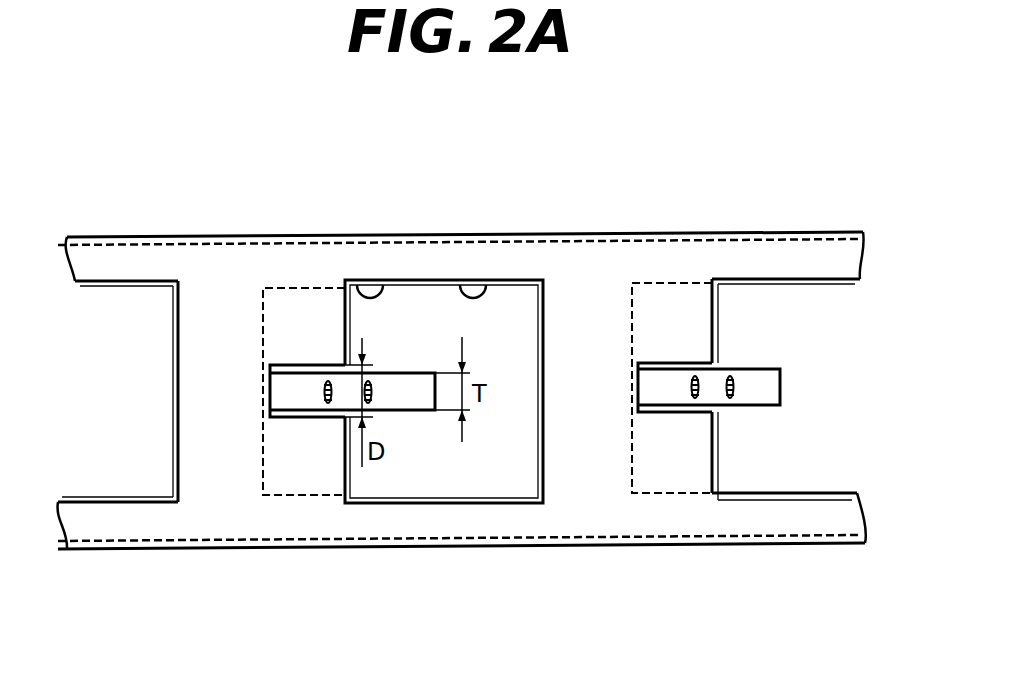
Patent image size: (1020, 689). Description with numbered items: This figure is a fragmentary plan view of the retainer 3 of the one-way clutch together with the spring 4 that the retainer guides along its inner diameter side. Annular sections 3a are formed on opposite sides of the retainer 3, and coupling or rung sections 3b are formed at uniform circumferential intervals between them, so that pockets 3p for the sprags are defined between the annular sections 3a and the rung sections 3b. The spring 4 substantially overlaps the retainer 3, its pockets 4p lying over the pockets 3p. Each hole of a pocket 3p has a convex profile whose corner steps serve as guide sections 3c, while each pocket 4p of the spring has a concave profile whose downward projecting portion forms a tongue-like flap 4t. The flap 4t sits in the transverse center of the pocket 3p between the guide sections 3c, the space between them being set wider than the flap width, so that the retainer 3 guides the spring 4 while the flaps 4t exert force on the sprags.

The retainer 3 is at (208, 225).
The annular section 3a is at (795, 253).
The coupling section (rung section) 3b is at (588, 350).
The guide section 3c is at (315, 343).
The pocket 3p is at (485, 287).
The spring 4 is at (690, 240).
The pocket 4p is at (368, 284).
The tongue-like flap 4t is at (407, 380).